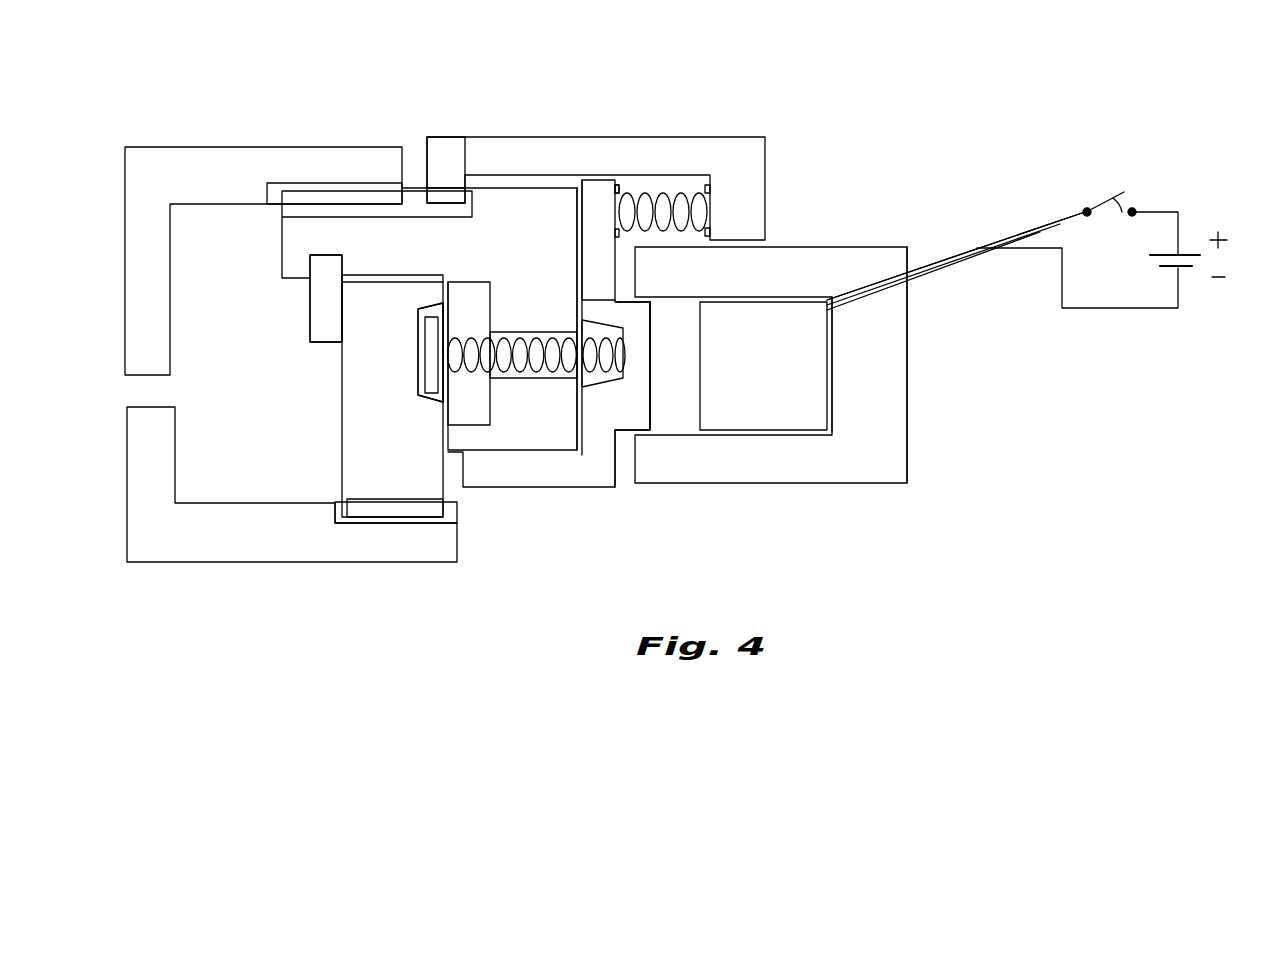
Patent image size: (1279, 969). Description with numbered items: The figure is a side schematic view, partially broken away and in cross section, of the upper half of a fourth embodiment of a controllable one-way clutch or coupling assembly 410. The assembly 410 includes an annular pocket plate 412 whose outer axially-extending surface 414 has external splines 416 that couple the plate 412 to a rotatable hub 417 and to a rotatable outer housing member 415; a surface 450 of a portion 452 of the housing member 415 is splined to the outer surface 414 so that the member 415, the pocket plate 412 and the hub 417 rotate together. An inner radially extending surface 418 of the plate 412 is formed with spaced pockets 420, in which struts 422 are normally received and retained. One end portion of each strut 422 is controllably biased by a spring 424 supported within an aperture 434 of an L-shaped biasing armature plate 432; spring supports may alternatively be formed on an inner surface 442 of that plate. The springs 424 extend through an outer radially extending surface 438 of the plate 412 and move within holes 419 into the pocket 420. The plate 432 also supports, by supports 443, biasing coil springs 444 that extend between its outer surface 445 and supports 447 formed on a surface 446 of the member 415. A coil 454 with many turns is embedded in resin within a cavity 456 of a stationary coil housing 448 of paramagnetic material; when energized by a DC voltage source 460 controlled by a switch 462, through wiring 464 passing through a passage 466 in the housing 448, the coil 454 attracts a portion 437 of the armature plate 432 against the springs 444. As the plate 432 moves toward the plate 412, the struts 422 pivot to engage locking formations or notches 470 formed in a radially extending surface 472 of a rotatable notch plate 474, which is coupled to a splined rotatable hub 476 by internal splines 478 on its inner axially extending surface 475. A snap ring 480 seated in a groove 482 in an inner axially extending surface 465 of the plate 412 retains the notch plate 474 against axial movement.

The controllable one-way clutch or coupling assembly 410 is at (951, 382).
The annular pocket plate 412 is at (553, 458).
The outer axially-extending surface 414 is at (308, 214).
The rotatable outer housing member 415 is at (580, 130).
The external splines 416 is at (362, 288).
The rotatable hub 417 is at (148, 147).
The inner radially extending surface 418 is at (435, 295).
The holes 419 is at (505, 338).
The pockets 420 is at (470, 415).
The struts 422 is at (440, 325).
The springs 424 is at (535, 373).
The L-shaped biasing armature plate 432 is at (597, 172).
The apertures 434 is at (617, 325).
The portion of the biasing armature plate 437 is at (655, 370).
The outer radially extending surface 438 is at (617, 437).
The inner surface of the plate 442 is at (576, 233).
The supports 443 is at (650, 193).
The biasing coil springs 444 is at (640, 205).
The outer surface of the plate 445 is at (618, 258).
The surface of the member 446 is at (708, 197).
The supports 447 is at (707, 188).
The stationary coil housing 448 is at (913, 488).
The surface of a portion of the housing member 450 is at (446, 178).
The portion of the housing member 452 is at (447, 137).
The coil 454 is at (830, 366).
The cavity 456 is at (824, 404).
The DC voltage source 460 is at (1190, 253).
The switch 462 is at (1138, 200).
The wiring 464 is at (1027, 225).
The inner axially extending surface 465 is at (358, 188).
The passage 466 is at (886, 282).
The locking formations or notches 470 is at (432, 402).
The radially extending surface 472 is at (428, 362).
The rotatable notch plate 474 is at (340, 468).
The inner axially extending surface 475 is at (420, 503).
The splined rotatable hub 476 is at (152, 563).
The internal splines 478 is at (368, 518).
The snap ring 480 is at (308, 307).
The groove 482 is at (327, 260).